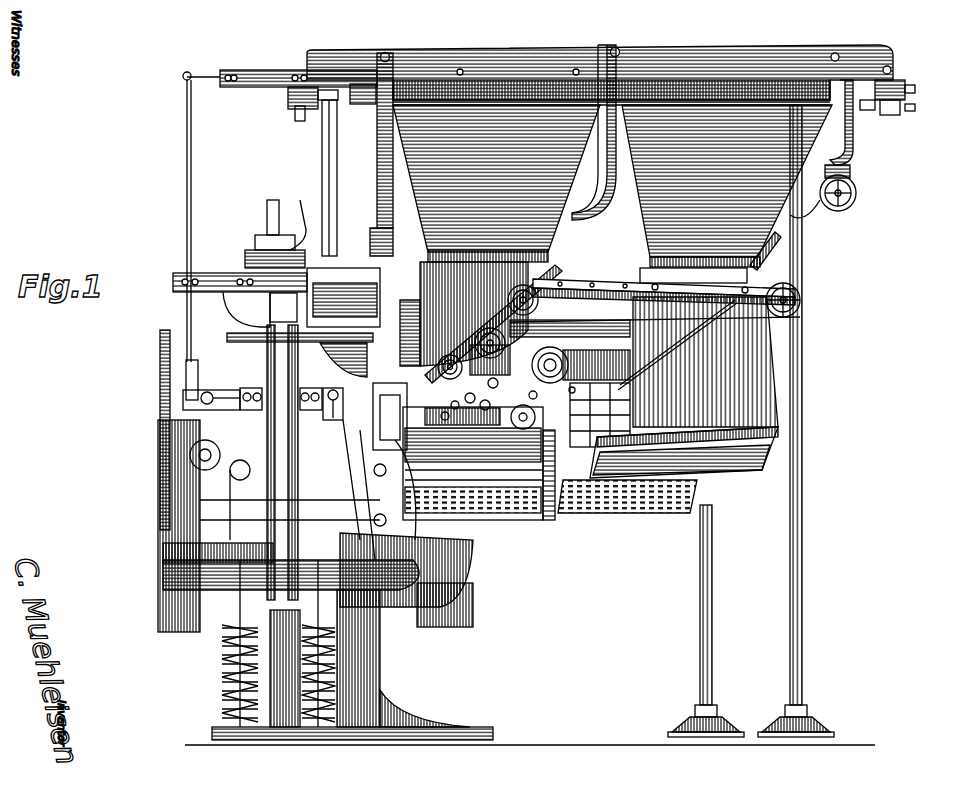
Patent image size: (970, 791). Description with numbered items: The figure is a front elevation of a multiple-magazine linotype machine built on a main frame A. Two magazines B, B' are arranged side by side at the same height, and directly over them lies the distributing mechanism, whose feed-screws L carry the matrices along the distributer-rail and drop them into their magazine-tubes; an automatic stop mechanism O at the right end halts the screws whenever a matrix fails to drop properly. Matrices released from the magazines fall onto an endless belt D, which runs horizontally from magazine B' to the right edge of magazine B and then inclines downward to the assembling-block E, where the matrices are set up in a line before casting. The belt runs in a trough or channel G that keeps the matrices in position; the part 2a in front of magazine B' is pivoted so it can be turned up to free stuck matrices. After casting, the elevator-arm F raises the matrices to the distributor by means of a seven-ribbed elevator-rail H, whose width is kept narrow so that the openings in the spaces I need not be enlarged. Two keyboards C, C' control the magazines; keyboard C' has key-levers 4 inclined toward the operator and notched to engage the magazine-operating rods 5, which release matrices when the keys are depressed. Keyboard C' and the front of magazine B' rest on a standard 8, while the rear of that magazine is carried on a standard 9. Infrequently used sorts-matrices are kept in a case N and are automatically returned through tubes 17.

The feed-screws L is at (468, 82).
The automatic stop mechanism O is at (895, 81).
The elevator-rail H is at (305, 108).
The elevator-arm F is at (322, 187).
The main frame A is at (378, 212).
The magazine B is at (496, 183).
The magazine B' is at (727, 181).
The spaces I is at (716, 264).
The channel part 2a is at (693, 277).
The tubes 17 is at (548, 272).
The trough or channel G is at (655, 290).
The endless belt D is at (800, 328).
The magazine-operating rods 5 is at (776, 378).
The case N is at (572, 425).
The keyboard C is at (479, 478).
The keyboard C' is at (627, 511).
The key-levers 4 is at (745, 455).
The assembling-block E is at (341, 406).
The standard 8 is at (708, 590).
The standard 9 is at (803, 592).